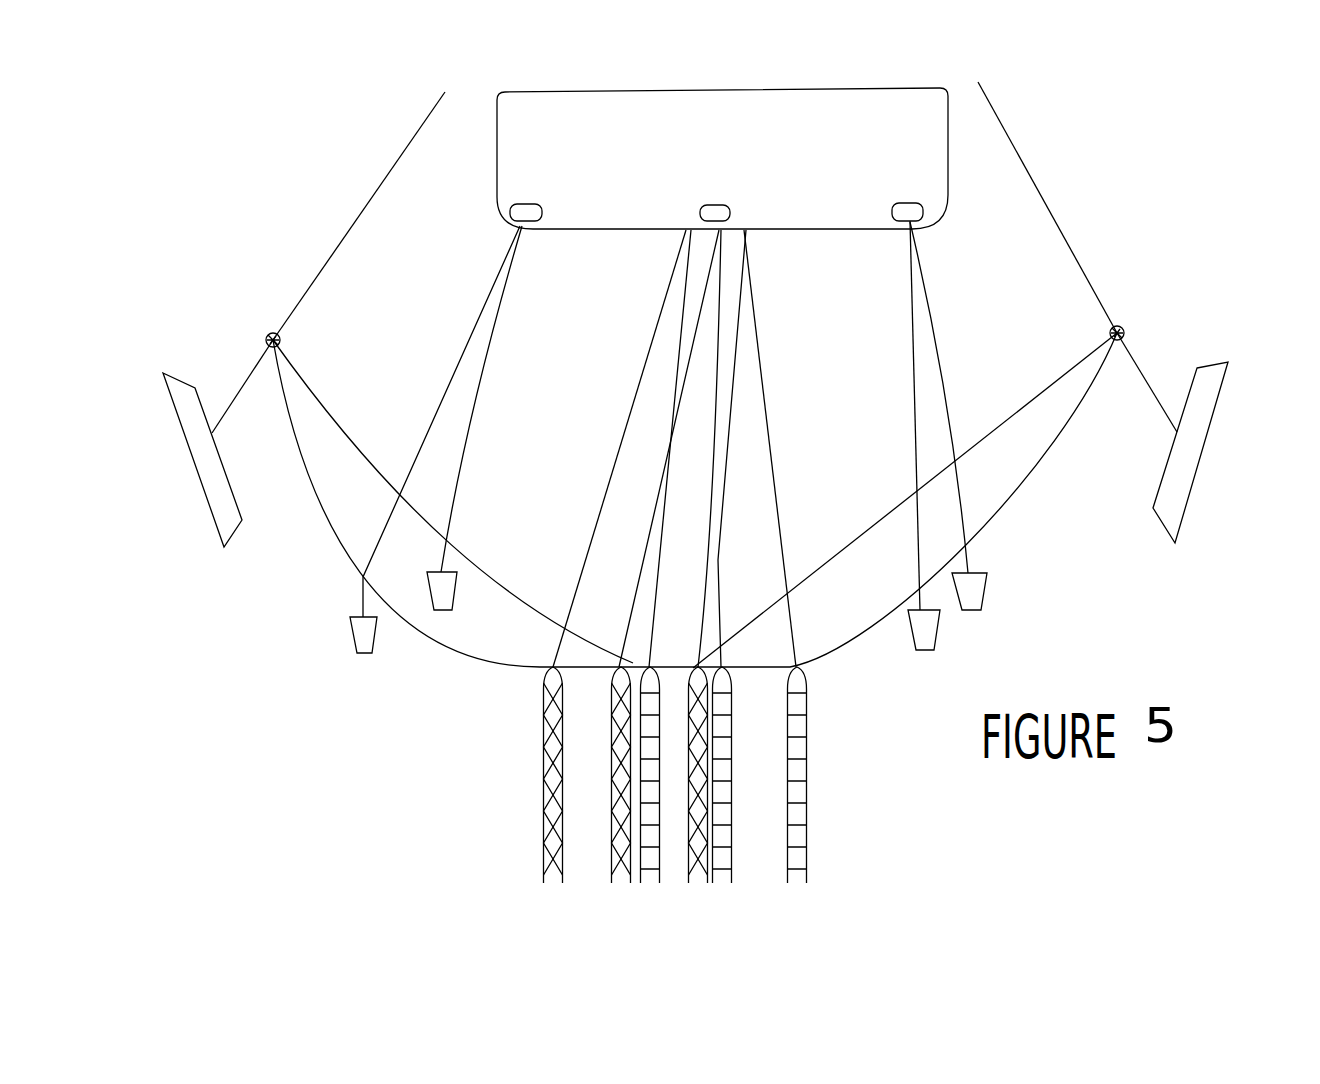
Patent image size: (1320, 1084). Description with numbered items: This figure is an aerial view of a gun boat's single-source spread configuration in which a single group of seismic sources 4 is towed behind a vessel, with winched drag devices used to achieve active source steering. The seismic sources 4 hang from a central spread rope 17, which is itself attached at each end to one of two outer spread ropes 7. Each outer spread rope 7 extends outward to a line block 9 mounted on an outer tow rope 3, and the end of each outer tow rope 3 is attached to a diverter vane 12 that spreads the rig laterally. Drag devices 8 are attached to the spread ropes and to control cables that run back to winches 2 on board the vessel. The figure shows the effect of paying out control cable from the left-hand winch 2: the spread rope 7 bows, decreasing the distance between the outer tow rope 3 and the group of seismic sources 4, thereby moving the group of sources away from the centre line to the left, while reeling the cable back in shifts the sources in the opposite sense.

The winch 2 is at (542, 213).
The outer tow rope 3 is at (325, 268).
The seismic source 4 is at (657, 883).
The outer spread rope 7 is at (323, 408).
The drag device 8 is at (372, 653).
The line block 9 is at (1124, 329).
The diverter vane 12 is at (192, 453).
The central spread rope 17 is at (753, 670).